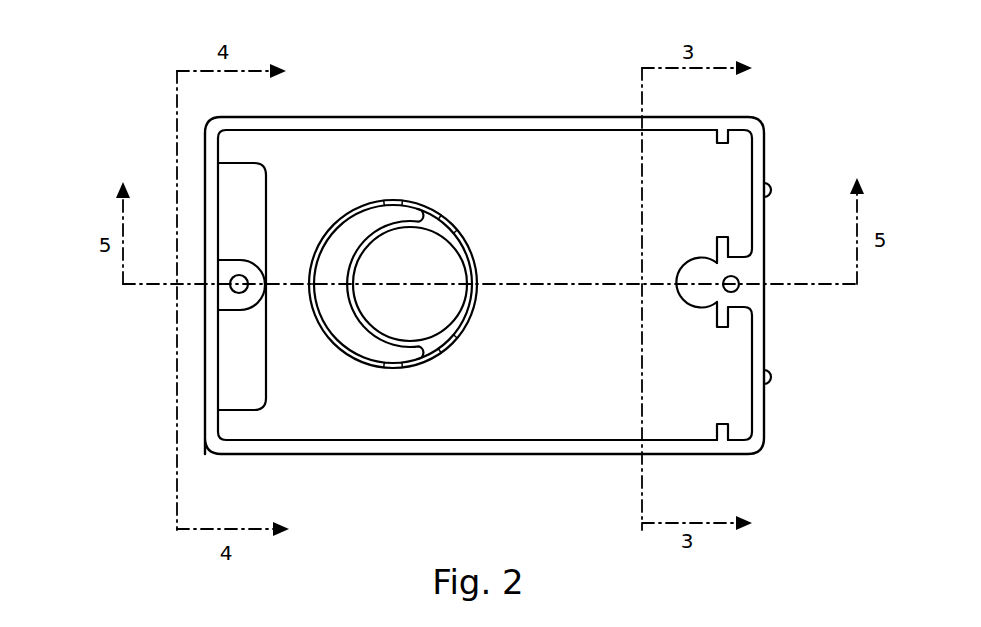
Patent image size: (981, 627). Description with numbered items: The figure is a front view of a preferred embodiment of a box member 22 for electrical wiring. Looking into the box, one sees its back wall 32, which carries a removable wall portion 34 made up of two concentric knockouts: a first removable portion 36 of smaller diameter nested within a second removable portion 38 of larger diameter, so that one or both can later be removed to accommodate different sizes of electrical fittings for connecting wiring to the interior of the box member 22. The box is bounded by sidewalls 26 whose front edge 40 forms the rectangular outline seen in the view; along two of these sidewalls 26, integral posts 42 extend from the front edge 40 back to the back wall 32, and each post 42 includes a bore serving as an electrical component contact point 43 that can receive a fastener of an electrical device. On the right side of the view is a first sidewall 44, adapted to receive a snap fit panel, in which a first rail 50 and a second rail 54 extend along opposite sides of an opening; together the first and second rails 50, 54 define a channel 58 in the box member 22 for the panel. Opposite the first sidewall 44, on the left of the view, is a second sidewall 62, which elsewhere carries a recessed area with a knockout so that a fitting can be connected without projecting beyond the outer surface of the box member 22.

The box member 22 is at (150, 96).
The sidewalls 26 is at (572, 117).
The back wall 32 is at (556, 217).
The removable wall portion 34 is at (448, 193).
The first removable portion 36 is at (424, 272).
The second removable portion 38 is at (337, 316).
The front edge 40 is at (358, 117).
The integral posts 42 is at (706, 272).
The electrical component contact points 43 is at (731, 284).
The first sidewall 44 is at (766, 181).
The first rail 50 is at (722, 144).
The second rail 54 is at (722, 236).
The channel 58 is at (732, 197).
The second sidewall 62 is at (215, 358).